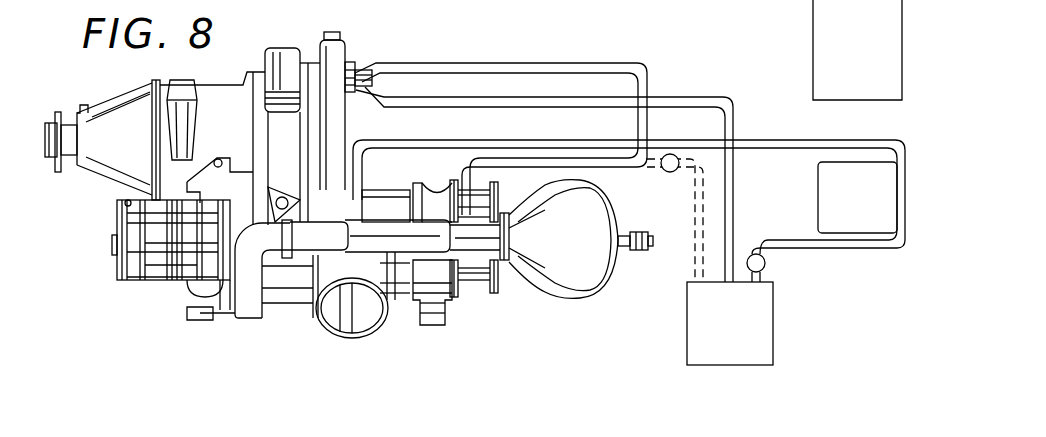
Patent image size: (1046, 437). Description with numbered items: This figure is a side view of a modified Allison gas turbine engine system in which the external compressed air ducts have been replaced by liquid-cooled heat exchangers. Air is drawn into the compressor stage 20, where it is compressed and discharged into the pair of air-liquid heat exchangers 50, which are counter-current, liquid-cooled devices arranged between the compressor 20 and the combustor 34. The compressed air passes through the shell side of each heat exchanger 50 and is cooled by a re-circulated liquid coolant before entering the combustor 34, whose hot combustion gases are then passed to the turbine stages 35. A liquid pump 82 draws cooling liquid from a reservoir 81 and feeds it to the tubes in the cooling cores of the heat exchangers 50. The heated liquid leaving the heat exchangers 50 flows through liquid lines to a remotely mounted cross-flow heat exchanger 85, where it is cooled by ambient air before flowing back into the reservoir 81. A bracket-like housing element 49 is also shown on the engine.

The compressor stage 20 is at (157, 282).
The combustor 34 is at (600, 292).
The turbine stages 35 is at (436, 186).
The bearing housing 49 is at (313, 205).
The air-liquid heat exchanger 50 is at (400, 262).
The reservoir 81 is at (760, 365).
The liquid pump 82 is at (360, 64).
The remotely mounted heat exchanger 85 is at (813, 48).